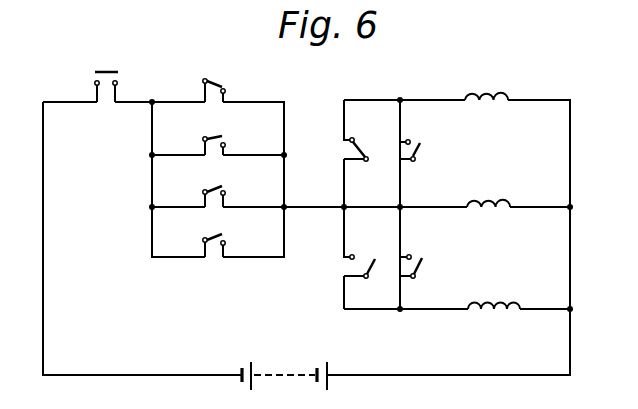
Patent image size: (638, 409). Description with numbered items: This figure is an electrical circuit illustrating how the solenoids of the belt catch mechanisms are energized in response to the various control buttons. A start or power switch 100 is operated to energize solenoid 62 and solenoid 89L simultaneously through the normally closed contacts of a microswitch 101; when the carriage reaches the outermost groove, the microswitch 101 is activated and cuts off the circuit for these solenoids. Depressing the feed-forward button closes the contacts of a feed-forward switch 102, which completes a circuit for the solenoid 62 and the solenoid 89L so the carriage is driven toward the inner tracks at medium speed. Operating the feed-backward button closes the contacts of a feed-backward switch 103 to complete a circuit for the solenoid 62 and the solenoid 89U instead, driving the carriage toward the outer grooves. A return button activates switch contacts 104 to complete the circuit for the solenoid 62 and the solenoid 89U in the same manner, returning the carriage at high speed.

The start or power switch 100 is at (107, 90).
The microswitch 101 is at (228, 88).
The feed-forward switch 102 is at (226, 141).
The feed-backward switch 103 is at (227, 192).
The switch contacts 104 is at (228, 242).
The solenoid 89L is at (470, 95).
The solenoid 62 is at (472, 202).
The solenoid 89U is at (468, 301).